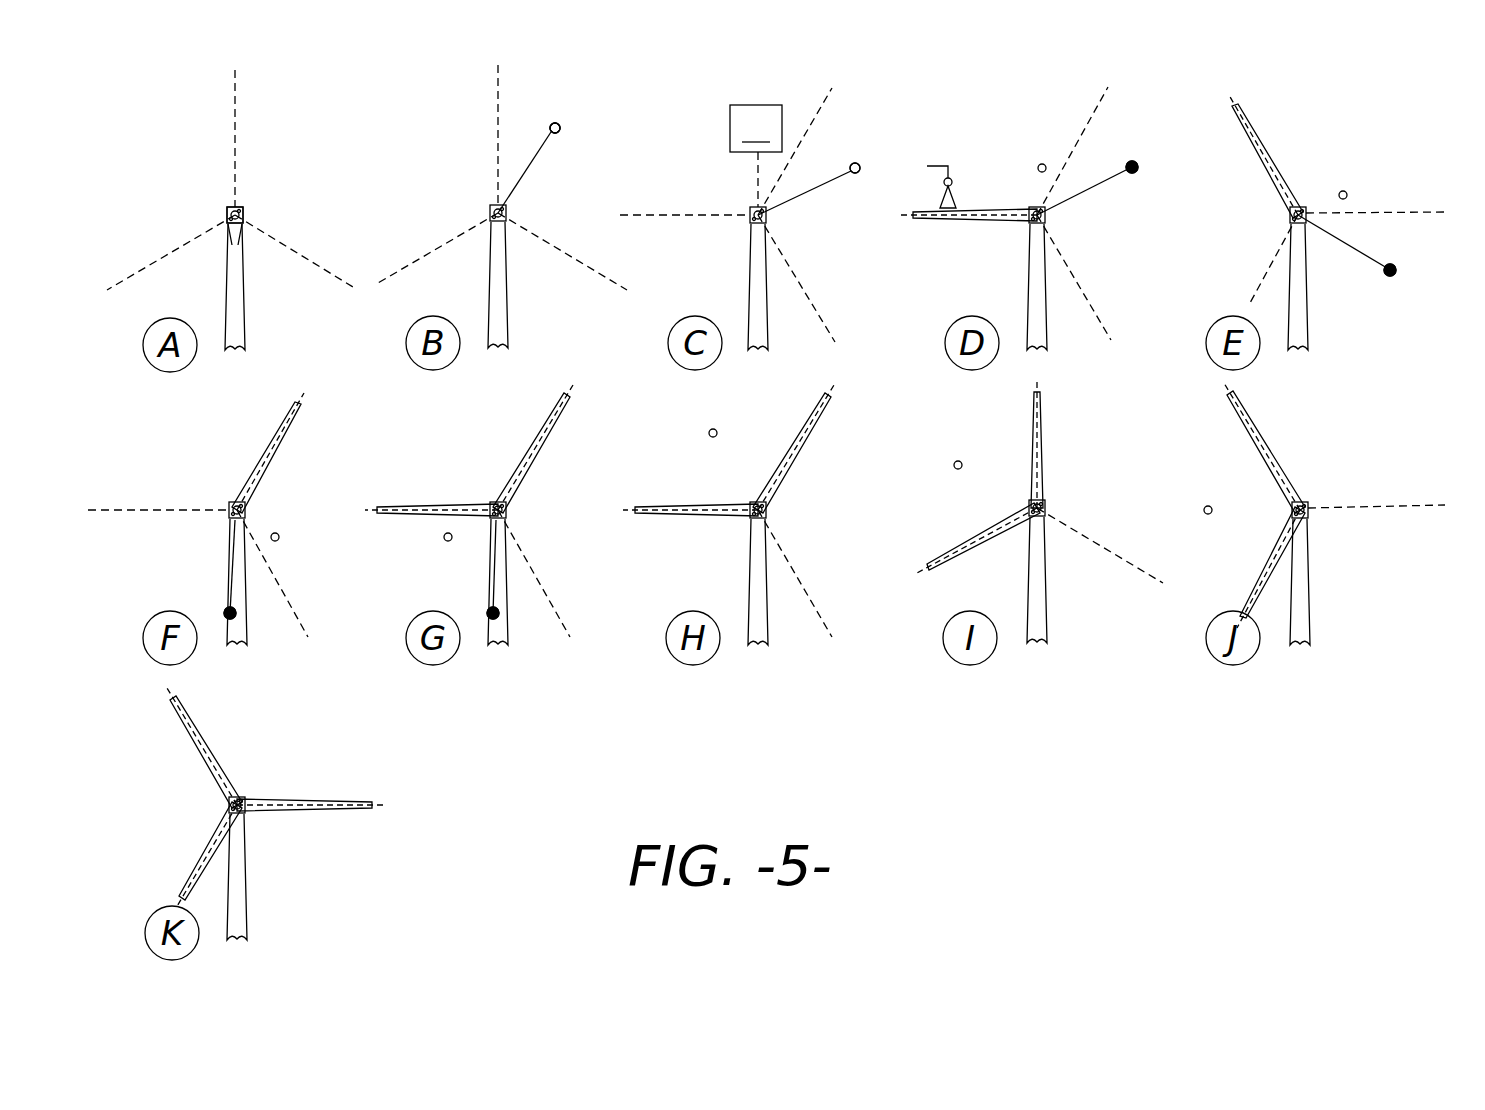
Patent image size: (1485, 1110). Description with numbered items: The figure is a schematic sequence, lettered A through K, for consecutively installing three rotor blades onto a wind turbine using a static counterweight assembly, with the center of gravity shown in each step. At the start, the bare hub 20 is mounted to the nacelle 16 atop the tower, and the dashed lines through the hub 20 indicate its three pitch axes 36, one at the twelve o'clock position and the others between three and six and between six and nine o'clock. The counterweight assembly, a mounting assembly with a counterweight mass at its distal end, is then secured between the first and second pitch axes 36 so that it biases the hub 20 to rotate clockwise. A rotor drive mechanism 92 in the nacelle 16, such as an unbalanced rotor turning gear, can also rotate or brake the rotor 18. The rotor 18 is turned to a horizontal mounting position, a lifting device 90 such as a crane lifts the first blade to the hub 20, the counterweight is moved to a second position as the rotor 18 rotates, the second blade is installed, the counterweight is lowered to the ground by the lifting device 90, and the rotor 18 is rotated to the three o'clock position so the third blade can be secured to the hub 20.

The nacelle 16 is at (247, 208).
The rotor 18 is at (224, 208).
The hub 20 is at (231, 242).
The pitch axis 36 is at (272, 236).
The lifting device 90 is at (962, 175).
The rotor drive mechanism 92 is at (756, 156).